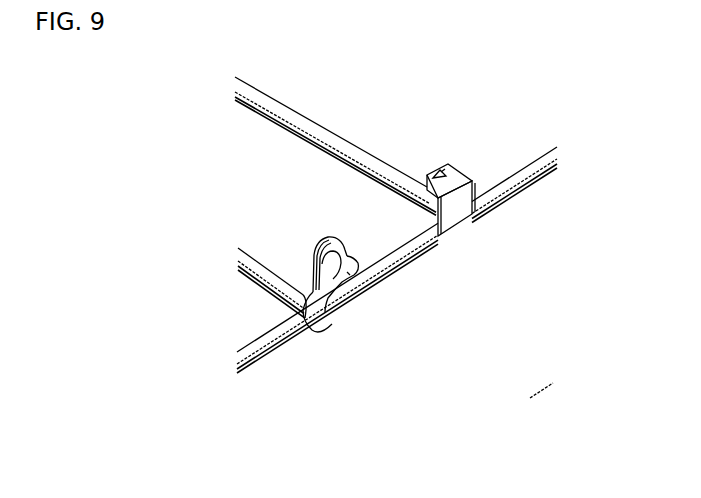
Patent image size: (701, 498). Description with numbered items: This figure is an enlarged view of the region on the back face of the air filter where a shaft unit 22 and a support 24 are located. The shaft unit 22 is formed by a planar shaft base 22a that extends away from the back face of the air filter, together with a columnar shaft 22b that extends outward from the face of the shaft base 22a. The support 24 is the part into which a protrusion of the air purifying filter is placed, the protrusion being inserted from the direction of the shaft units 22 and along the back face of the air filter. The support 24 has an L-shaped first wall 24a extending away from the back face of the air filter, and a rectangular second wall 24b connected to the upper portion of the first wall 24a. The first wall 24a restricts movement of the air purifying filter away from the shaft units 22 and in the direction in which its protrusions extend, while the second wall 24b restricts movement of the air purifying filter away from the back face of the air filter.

The shaft unit 22 is at (323, 343).
The shaft base 22a is at (325, 328).
The columnar shaft 22b is at (345, 328).
The support 24 is at (534, 231).
The first wall 24a is at (453, 218).
The second wall 24b is at (457, 177).